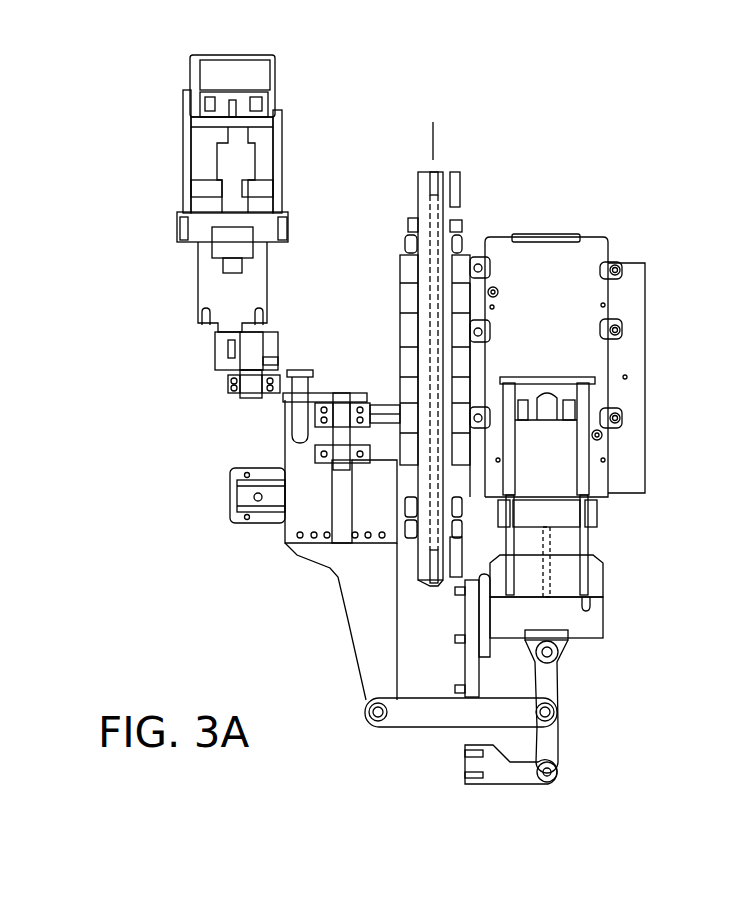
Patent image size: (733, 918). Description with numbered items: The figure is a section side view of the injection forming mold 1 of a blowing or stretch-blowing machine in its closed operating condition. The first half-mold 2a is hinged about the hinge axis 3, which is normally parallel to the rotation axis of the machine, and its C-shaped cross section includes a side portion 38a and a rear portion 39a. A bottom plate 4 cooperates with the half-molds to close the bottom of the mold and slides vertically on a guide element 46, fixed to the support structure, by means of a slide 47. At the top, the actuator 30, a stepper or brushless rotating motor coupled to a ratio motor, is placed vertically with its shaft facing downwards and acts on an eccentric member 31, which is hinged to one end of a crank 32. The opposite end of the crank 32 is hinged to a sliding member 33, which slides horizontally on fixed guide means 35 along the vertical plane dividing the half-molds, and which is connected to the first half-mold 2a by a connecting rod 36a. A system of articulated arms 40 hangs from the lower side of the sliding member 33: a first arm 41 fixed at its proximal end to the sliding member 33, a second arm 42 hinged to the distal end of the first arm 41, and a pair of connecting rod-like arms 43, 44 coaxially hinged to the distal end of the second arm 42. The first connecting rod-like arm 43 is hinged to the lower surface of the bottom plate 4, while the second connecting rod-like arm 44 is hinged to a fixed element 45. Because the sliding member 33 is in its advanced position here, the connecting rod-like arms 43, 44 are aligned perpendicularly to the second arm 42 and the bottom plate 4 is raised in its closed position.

The injection forming mold 1 is at (531, 123).
The first half-mold 2a is at (598, 363).
The hinge axis 3 is at (440, 170).
The bottom plate 4 is at (572, 607).
The actuator 30 is at (280, 122).
The eccentric member 31 is at (215, 348).
The crank 32 is at (274, 398).
The sliding member 33 is at (306, 516).
The guide means 35 is at (247, 500).
The connecting rod 36a is at (388, 407).
The side portion 38a is at (546, 436).
The rear portion 39a is at (403, 265).
The system of articulated arms 40 is at (464, 693).
The first arm 41 is at (368, 647).
The second arm 42 is at (437, 722).
The first connecting rod-like arm 43 is at (548, 685).
The second connecting rod-like arm 44 is at (550, 748).
The fixed element 45 is at (511, 794).
The guide element 46 is at (473, 672).
The slide 47 is at (487, 627).